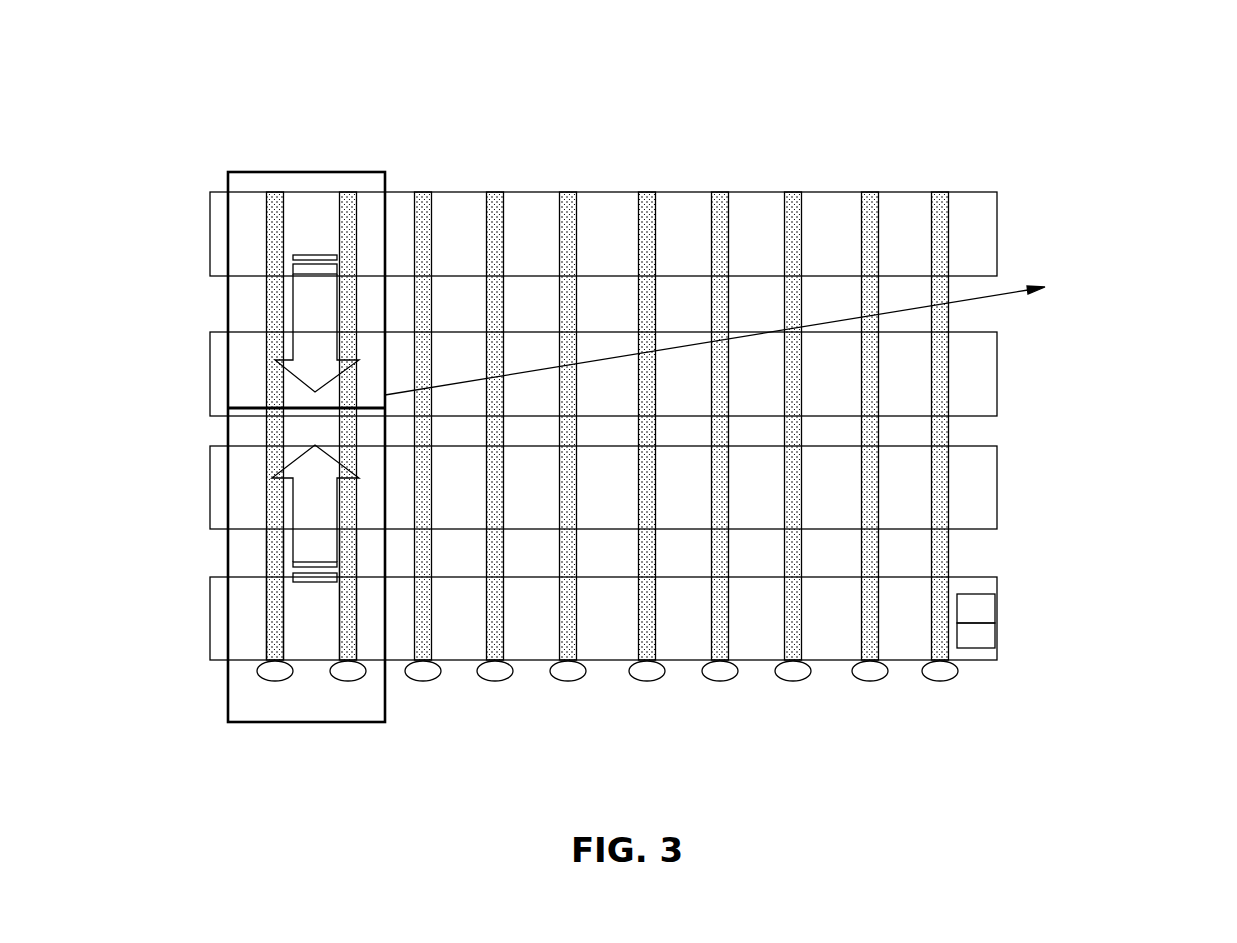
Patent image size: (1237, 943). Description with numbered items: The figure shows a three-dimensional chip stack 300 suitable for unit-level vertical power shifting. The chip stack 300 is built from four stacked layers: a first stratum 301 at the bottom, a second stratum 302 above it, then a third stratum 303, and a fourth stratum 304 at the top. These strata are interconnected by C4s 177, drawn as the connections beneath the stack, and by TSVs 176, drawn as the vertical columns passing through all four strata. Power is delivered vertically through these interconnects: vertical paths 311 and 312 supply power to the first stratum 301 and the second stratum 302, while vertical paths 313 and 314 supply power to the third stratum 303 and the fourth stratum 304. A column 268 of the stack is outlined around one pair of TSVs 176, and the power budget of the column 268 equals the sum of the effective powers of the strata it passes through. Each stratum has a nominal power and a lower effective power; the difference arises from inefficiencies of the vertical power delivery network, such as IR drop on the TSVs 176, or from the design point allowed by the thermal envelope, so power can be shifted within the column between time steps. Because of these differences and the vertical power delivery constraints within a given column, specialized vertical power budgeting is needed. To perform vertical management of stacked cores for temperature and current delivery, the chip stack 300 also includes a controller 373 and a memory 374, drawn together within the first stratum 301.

The 3D chip stack 300 is at (688, 30).
The TSVs 176 is at (555, 367).
The C4s 177 is at (559, 664).
The column 268 is at (299, 404).
The stratum-1 301 is at (1050, 613).
The stratum-2 302 is at (1050, 488).
The stratum-3 303 is at (1050, 381).
The stratum-4 304 is at (1050, 201).
The vertical path 311 is at (223, 610).
The vertical path 312 is at (326, 605).
The vertical path 313 is at (250, 236).
The vertical path 314 is at (322, 425).
The controller 373 is at (1015, 580).
The memory 374 is at (1018, 662).